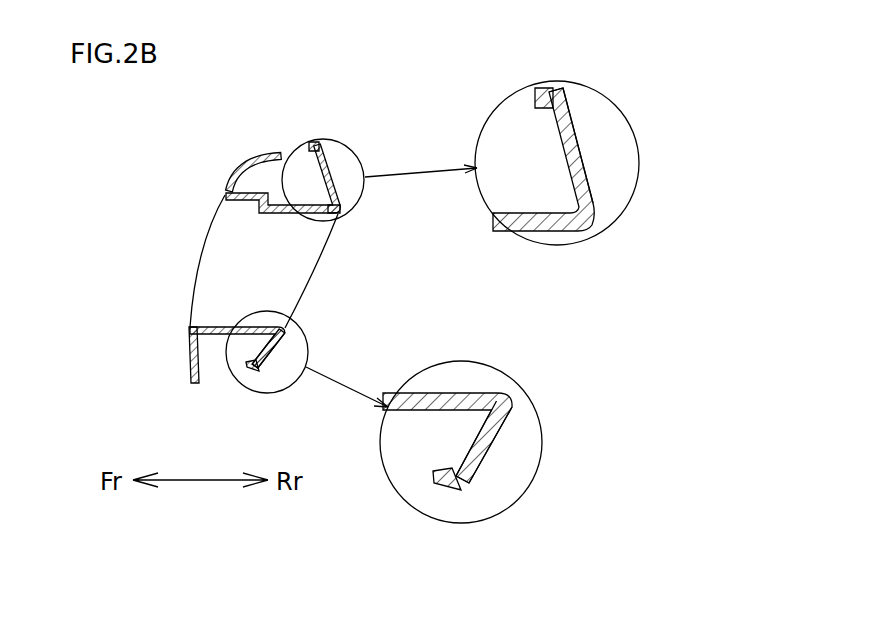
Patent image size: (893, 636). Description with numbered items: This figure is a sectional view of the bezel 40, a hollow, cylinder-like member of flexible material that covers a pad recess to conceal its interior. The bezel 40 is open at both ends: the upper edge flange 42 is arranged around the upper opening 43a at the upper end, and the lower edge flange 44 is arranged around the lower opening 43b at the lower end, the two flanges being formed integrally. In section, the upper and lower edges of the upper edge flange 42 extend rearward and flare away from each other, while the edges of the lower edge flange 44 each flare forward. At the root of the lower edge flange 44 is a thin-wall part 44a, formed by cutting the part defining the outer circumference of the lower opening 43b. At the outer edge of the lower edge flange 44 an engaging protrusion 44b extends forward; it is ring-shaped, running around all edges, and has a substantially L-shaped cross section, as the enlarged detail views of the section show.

The bezel 40 is at (213, 184).
The upper edge flange 42 is at (252, 167).
The upper opening 43a is at (215, 281).
The lower opening 43b is at (298, 273).
The lower edge flange 44 is at (333, 176).
The thin-wall part 44a is at (338, 213).
The engaging protrusion 44b is at (316, 141).